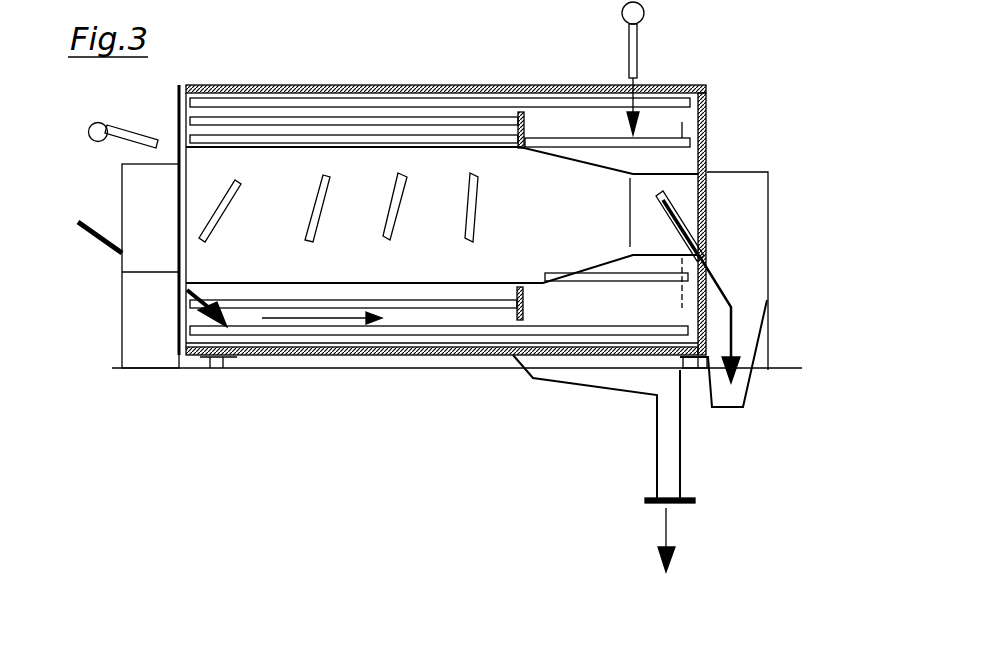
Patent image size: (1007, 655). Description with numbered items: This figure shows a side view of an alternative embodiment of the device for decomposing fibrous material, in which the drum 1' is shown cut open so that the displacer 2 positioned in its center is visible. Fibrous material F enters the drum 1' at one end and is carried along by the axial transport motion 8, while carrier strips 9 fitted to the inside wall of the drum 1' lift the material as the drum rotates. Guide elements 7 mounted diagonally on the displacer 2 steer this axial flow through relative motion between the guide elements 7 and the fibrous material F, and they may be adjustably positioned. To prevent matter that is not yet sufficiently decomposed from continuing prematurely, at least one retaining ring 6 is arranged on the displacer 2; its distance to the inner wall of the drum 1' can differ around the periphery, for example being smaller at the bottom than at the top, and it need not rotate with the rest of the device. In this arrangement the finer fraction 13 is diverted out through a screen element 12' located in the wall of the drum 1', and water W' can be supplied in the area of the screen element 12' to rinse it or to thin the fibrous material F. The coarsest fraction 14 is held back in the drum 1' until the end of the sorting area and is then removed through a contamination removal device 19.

The drum 1' is at (457, 191).
The displacer 2 is at (364, 268).
The retaining ring 6 is at (514, 320).
The guide elements 7 is at (227, 193).
The axial transport motion 8 is at (352, 318).
The carrier strips 9 is at (435, 302).
The screen element 12' is at (442, 398).
The finer fraction 13 is at (678, 552).
The coarsest fraction 14 is at (732, 373).
The contamination removal device 19 is at (668, 190).
The fibrous material F is at (94, 224).
The water W' is at (686, 68).